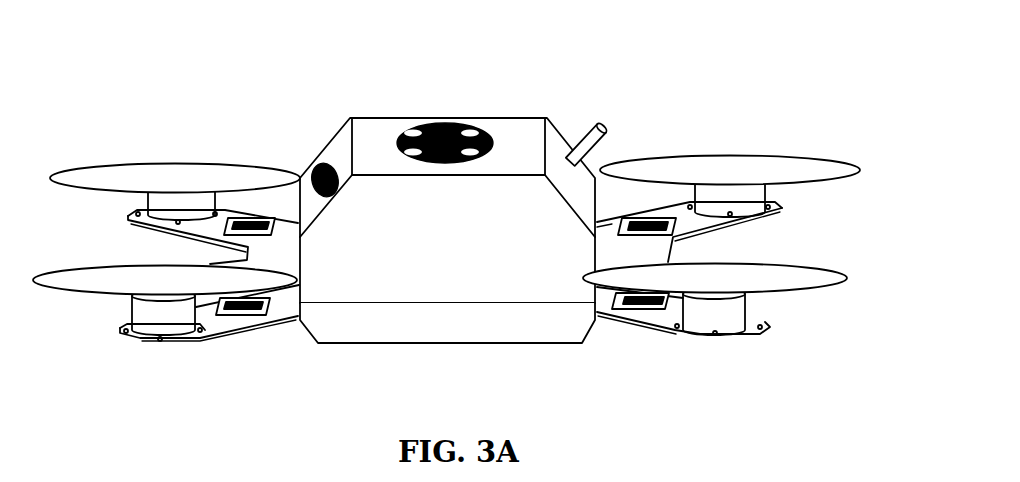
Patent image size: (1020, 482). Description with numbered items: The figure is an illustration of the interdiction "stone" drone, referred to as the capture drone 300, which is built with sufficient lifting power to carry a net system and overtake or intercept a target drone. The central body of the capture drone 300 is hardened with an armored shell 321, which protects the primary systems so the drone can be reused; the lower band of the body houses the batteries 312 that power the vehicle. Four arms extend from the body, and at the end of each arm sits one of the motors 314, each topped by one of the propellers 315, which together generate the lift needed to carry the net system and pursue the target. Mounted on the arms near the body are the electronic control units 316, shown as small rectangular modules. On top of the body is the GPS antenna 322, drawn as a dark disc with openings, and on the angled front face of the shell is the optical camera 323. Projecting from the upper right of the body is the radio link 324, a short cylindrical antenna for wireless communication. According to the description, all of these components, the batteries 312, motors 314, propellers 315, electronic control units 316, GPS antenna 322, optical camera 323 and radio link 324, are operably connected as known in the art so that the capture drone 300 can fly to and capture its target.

The capture drone 300 is at (556, 78).
The batteries 312 is at (463, 318).
The motor 314 is at (167, 317).
The propeller 315 is at (157, 177).
The electronic control unit 316 is at (640, 305).
The armored shell 321 is at (367, 272).
The GPS antenna 322 is at (440, 123).
The optical camera 323 is at (323, 163).
The radio link 324 is at (601, 144).